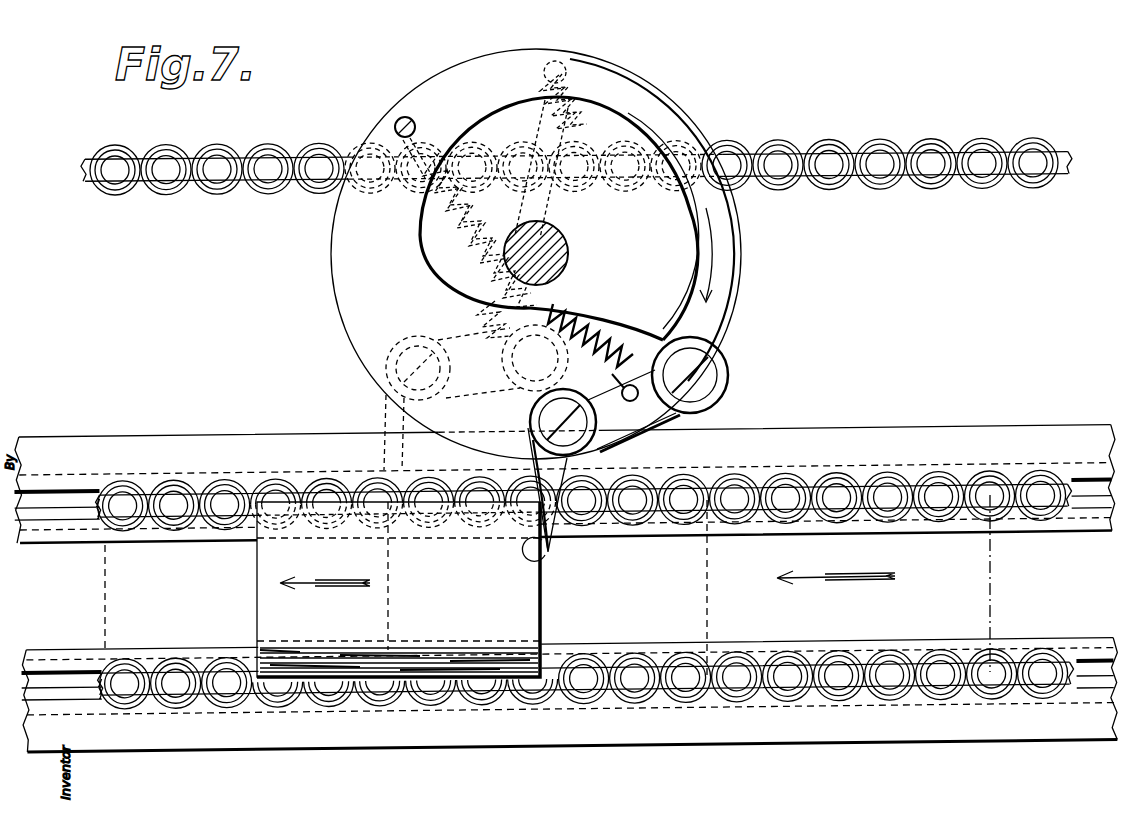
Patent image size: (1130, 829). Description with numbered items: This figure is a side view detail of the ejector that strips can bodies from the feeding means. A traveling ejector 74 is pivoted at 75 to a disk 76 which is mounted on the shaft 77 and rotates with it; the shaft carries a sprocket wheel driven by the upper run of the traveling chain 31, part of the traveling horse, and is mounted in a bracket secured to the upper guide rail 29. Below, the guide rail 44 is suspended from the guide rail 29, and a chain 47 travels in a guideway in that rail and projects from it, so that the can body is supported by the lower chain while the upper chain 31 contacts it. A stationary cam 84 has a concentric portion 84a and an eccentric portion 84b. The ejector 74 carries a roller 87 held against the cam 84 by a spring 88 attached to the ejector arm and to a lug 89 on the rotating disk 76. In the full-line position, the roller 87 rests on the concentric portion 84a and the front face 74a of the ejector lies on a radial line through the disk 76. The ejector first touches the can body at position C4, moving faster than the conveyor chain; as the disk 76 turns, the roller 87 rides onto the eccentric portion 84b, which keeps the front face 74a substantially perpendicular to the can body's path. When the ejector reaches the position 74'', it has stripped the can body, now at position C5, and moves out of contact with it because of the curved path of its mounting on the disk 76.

The disk 76 is at (723, 254).
The stationary cam 84 is at (559, 218).
The concentric portion 84a is at (628, 112).
The eccentric portion 84b is at (630, 348).
The shaft 77 is at (558, 247).
The spring 88 is at (432, 218).
The lug 89 is at (404, 117).
The roller 87 is at (730, 372).
The traveling ejector 74 is at (604, 461).
The front face 74a is at (546, 562).
The ejector position 74'' is at (443, 397).
The pivot 75 is at (548, 420).
The upper guide rail 29 is at (862, 450).
The traveling chain 31 is at (225, 512).
The chain 47 is at (634, 675).
The guide rail 44 is at (800, 728).
The can body position C5 is at (389, 597).
The can body position C4 is at (541, 600).